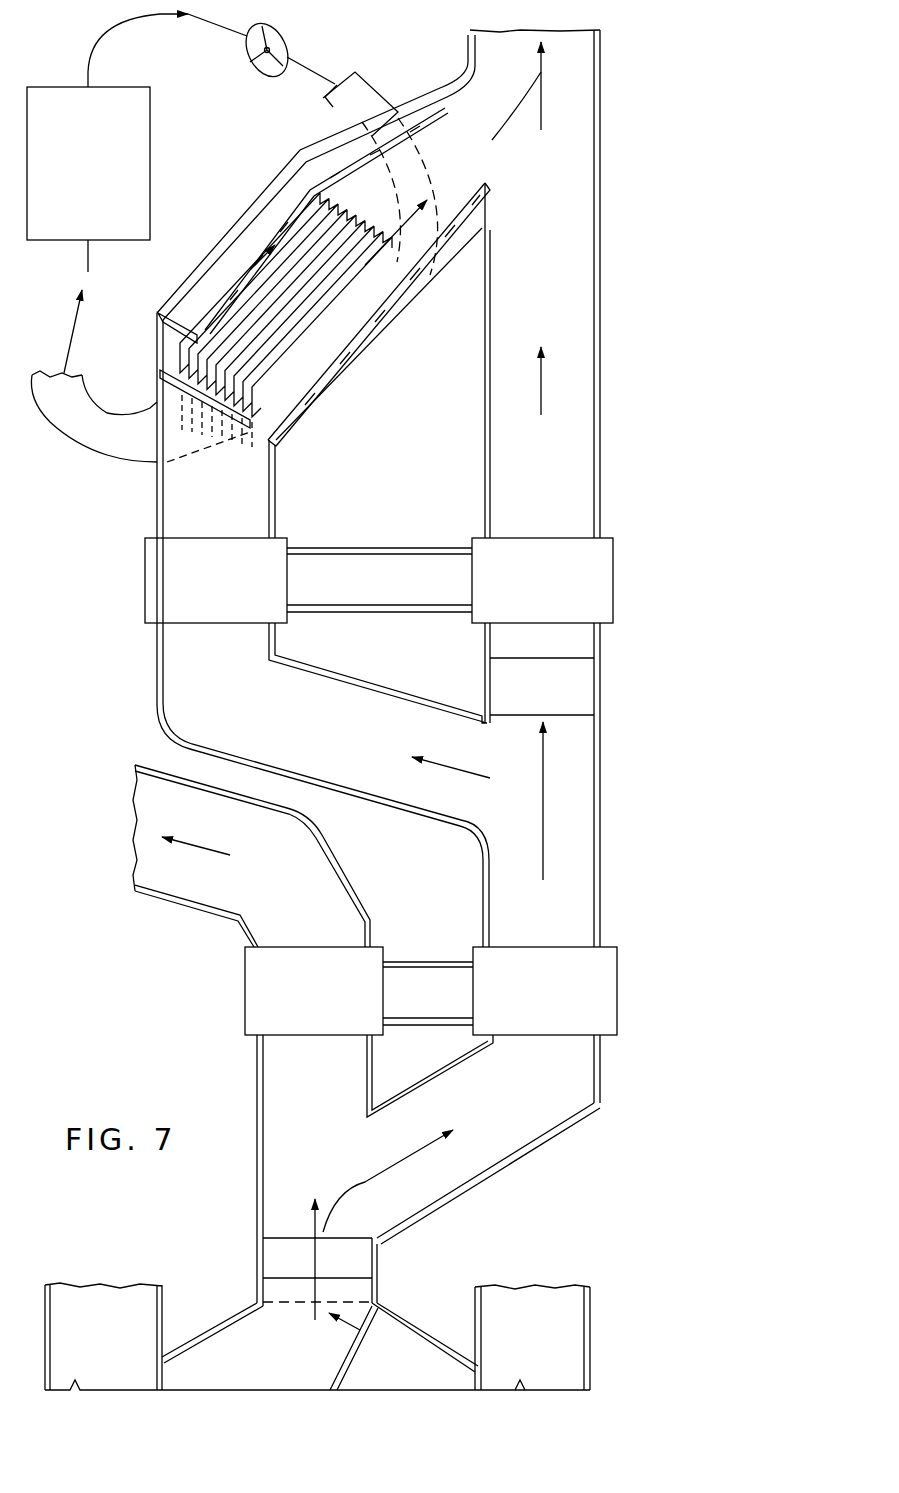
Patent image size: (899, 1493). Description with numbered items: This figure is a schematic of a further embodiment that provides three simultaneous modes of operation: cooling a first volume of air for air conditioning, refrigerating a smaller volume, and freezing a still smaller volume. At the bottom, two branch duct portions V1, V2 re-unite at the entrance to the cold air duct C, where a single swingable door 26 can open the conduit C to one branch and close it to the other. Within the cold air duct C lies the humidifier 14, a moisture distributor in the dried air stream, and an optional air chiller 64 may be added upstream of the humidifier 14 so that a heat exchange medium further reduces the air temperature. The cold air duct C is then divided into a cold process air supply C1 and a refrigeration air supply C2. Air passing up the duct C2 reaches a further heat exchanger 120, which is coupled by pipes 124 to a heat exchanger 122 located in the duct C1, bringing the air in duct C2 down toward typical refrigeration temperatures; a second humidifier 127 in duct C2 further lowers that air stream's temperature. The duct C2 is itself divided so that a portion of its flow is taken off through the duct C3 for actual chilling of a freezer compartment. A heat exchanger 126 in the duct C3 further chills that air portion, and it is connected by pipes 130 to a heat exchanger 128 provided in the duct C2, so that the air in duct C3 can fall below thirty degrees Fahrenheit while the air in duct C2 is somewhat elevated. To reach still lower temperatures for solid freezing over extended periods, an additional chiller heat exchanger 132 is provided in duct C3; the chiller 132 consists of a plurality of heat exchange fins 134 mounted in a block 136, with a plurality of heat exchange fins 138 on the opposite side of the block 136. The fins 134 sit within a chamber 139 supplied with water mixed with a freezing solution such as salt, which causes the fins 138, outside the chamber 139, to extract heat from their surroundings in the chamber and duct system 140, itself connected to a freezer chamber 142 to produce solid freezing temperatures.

The moisture distributor means or humidifier 14 is at (272, 1255).
The door 26 is at (345, 1355).
The air chiller 64 is at (250, 1312).
The heat exchanger 120 is at (500, 1005).
The heat exchanger 122 is at (265, 993).
The pipes 124 is at (418, 1018).
The heat exchanger 126 is at (178, 603).
The second humidifier 127 is at (505, 687).
The heat exchanger 128 is at (500, 587).
The pipes 130 is at (385, 605).
The chiller heat exchanger 132 is at (270, 257).
The heat exchange fins 134 is at (268, 300).
The block 136 is at (157, 402).
The heat exchange fins 138 is at (262, 462).
The chamber 139 is at (195, 308).
The chamber and duct system 140 is at (320, 126).
The freezer chamber 142 is at (150, 108).
The cold air duct C is at (258, 1295).
The cold process air supply C1 is at (255, 1045).
The refrigeration air supply C2 is at (600, 488).
The duct C3 is at (157, 497).
The vessel 1 V1 is at (50, 1332).
The vessel 2 V2 is at (590, 1333).